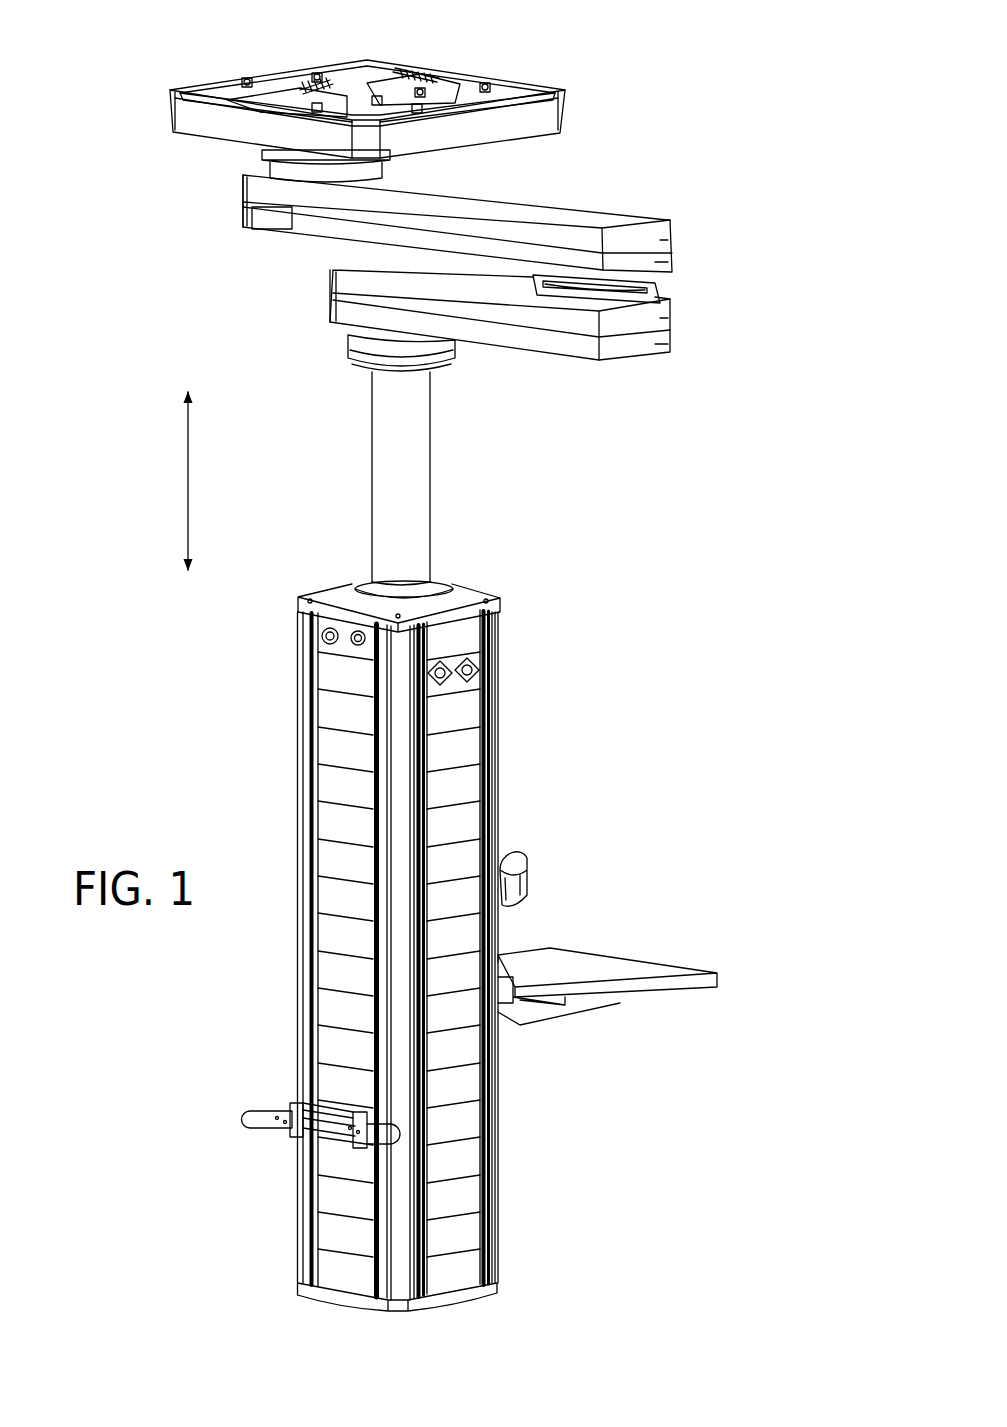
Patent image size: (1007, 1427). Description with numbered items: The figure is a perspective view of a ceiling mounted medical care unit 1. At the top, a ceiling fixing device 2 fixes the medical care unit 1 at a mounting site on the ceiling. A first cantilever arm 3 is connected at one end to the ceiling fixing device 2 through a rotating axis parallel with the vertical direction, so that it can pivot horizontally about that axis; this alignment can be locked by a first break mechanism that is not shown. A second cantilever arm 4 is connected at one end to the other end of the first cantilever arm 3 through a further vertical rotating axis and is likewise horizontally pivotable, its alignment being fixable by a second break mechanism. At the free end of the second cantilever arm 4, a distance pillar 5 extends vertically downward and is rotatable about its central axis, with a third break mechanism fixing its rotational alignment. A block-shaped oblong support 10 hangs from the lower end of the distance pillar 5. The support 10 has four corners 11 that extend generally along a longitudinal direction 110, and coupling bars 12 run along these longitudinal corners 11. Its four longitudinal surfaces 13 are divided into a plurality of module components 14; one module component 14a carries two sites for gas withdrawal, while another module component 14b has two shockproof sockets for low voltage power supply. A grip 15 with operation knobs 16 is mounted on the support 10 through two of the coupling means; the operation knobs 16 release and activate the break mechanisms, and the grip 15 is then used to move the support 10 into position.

The medical care unit 1 is at (728, 103).
The ceiling fixing device 2 is at (565, 100).
The first cantilever arm 3 is at (617, 207).
The second cantilever arm 4 is at (677, 317).
The distance pillar 5 is at (418, 485).
The support 10 is at (552, 573).
The corners 11 is at (502, 735).
The coupling bars 12 is at (423, 827).
The longitudinal surfaces 13 is at (457, 1070).
The module components 14 is at (463, 1125).
The module component 14a is at (335, 652).
The module component 14b is at (483, 660).
The grip 15 is at (217, 1112).
The operation knobs 16 is at (278, 1123).
The longitudinal direction 110 is at (187, 472).